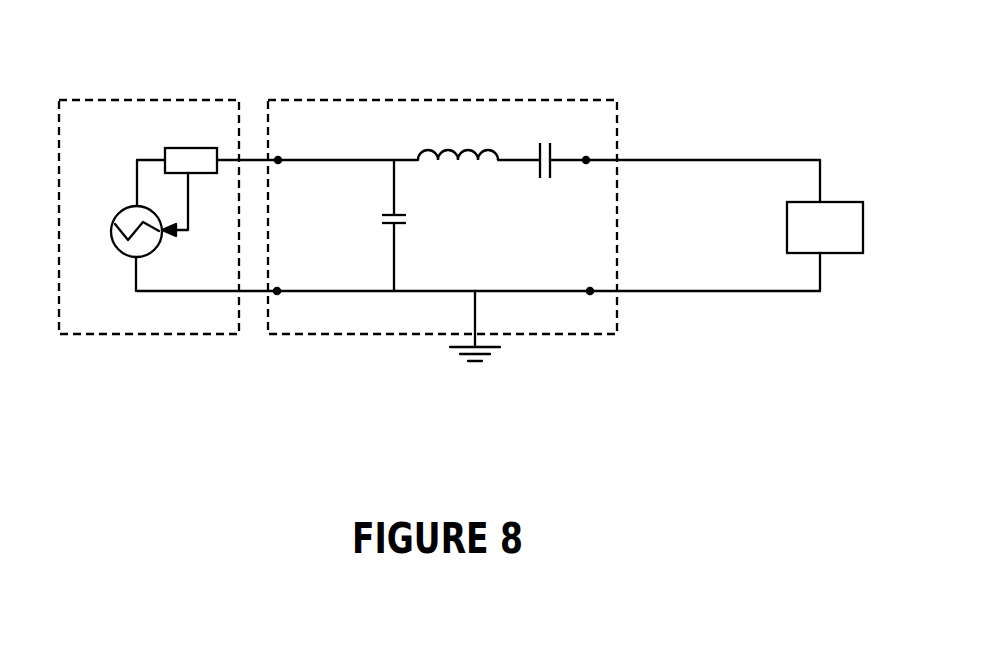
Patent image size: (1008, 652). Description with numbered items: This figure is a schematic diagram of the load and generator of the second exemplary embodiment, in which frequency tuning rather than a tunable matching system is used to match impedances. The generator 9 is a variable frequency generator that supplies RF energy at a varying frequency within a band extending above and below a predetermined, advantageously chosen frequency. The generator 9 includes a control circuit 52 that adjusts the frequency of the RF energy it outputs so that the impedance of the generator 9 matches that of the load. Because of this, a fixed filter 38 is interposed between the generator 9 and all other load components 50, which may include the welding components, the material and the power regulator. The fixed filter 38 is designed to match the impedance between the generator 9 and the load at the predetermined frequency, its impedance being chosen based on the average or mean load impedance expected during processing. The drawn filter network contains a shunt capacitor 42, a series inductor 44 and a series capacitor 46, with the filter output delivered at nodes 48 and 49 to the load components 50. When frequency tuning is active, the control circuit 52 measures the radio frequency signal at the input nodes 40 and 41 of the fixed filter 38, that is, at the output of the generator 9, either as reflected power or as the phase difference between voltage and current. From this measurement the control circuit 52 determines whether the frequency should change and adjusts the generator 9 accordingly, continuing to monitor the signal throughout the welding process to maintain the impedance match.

The generator 9 is at (165, 100).
The fixed filter 38 is at (327, 100).
The input node 40 is at (271, 158).
The input node 41 is at (277, 296).
The capacitor C1 42 is at (388, 228).
The inductor L1 44 is at (430, 150).
The capacitor C2 46 is at (557, 160).
The output node 48 is at (586, 160).
The output return node 49 is at (590, 291).
The all other load components 50 is at (863, 220).
The control circuit 52 is at (173, 148).